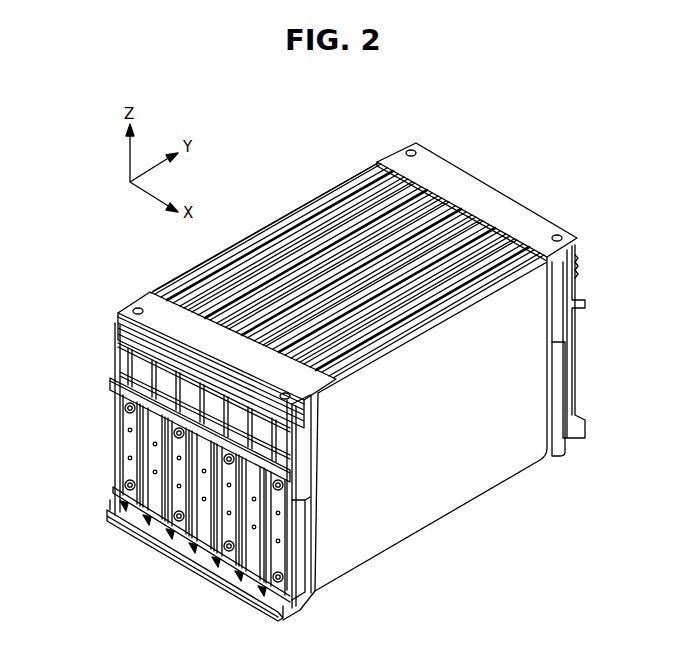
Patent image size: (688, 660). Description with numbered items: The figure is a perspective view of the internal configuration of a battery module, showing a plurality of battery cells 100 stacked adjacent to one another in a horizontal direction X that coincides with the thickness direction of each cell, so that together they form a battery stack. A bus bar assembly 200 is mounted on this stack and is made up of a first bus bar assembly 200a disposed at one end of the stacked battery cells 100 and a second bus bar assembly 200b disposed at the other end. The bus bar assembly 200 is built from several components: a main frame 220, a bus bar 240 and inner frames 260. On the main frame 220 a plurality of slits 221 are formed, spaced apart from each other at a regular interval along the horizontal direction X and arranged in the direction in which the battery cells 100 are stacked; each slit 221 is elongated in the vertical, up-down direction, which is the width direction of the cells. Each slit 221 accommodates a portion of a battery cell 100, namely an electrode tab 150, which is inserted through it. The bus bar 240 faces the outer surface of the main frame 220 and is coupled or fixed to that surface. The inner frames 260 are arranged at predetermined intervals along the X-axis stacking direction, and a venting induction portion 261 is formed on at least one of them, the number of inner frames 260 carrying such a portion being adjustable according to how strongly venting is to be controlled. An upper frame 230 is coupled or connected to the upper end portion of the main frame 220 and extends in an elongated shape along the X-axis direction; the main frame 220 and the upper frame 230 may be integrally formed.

The battery cell 100 is at (512, 482).
The bus bar assembly 200 is at (333, 435).
The first bus bar assembly 200a is at (169, 471).
The second bus bar assembly 200b is at (572, 350).
The main frame 220 is at (150, 366).
The slit 221 is at (137, 443).
The upper frame 230 is at (160, 300).
The bus bar 240 is at (126, 418).
The electrode tab 150 is at (143, 464).
The inner frame 260 is at (300, 562).
The venting induction portion 261 is at (300, 452).